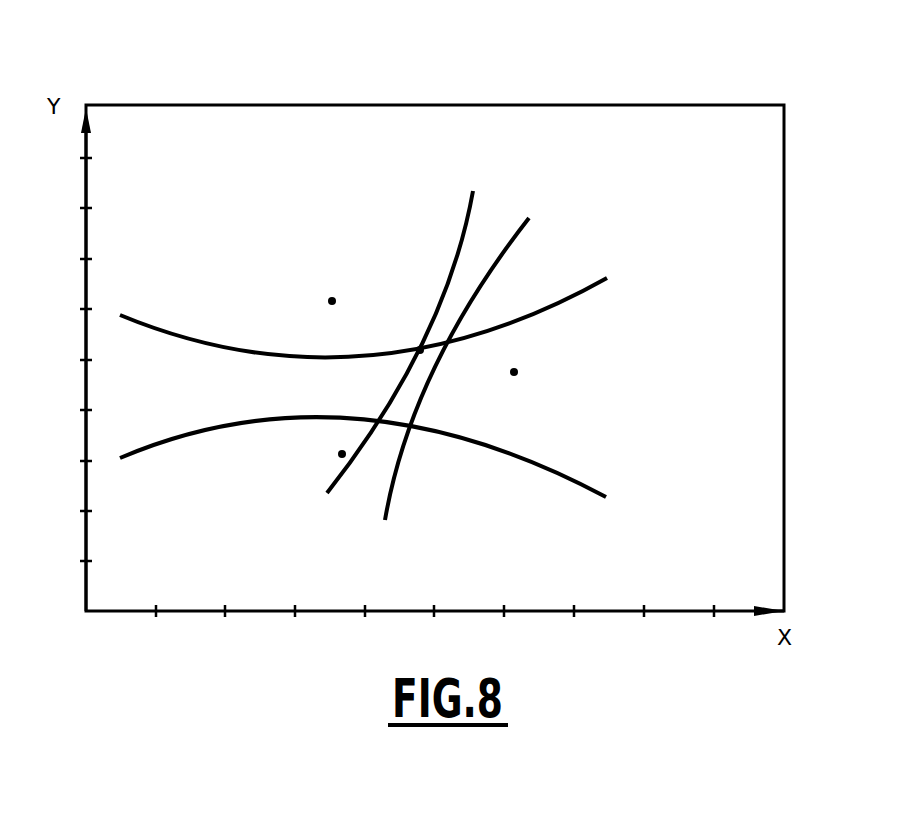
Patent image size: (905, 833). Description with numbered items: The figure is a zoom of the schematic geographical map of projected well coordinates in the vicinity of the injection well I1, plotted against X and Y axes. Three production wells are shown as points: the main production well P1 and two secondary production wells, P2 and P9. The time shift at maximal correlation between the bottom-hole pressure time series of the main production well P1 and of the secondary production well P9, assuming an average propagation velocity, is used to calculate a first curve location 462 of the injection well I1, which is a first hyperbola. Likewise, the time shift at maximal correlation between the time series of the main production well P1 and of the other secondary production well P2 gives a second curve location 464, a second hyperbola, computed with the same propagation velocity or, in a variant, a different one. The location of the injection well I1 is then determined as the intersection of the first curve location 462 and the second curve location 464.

The first curve location 462 is at (517, 236).
The second curve location 464 is at (539, 458).
The main production well P1 is at (339, 278).
The secondary production well P2 is at (326, 455).
The secondary production well P9 is at (511, 395).
The injection well I1 is at (411, 329).